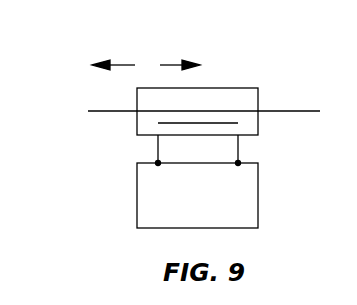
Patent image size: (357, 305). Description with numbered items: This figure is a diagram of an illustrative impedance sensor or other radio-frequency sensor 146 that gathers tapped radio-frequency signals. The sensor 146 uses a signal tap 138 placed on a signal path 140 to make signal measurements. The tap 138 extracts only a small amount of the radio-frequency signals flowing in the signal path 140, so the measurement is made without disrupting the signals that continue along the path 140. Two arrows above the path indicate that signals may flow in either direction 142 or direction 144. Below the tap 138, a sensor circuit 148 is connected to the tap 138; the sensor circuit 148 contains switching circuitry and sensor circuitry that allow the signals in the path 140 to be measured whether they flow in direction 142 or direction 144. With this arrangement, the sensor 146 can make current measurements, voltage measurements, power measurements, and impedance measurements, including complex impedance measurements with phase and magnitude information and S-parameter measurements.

The tap 138 is at (237, 88).
The signal path 140 is at (295, 111).
The direction 142 is at (170, 65).
The direction 144 is at (115, 65).
The sensor 146 is at (80, 75).
The sensor circuit 148 is at (258, 188).